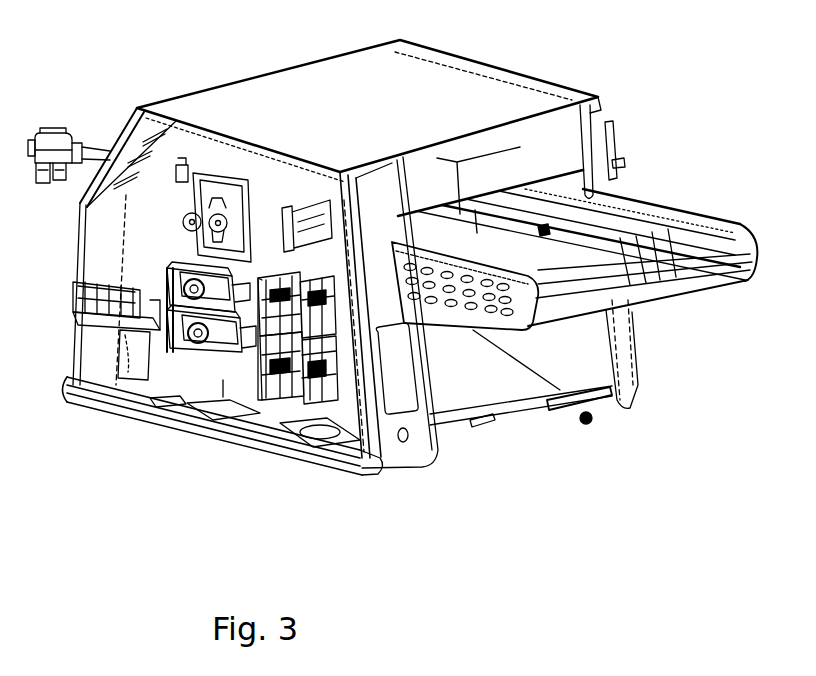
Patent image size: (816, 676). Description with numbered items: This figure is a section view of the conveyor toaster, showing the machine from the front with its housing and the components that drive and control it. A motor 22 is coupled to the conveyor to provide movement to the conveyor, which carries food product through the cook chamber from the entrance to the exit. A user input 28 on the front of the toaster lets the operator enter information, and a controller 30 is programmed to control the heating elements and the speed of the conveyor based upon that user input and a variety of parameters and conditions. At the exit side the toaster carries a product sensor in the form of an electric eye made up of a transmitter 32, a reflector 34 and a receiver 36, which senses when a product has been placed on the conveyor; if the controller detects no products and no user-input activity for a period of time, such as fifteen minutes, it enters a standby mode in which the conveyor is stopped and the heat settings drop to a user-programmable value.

The motor 22 is at (190, 352).
The user input 28 is at (400, 387).
The controller 30 is at (285, 395).
The transmitter 32 is at (637, 217).
The reflector 34 is at (663, 213).
The receiver 36 is at (545, 232).